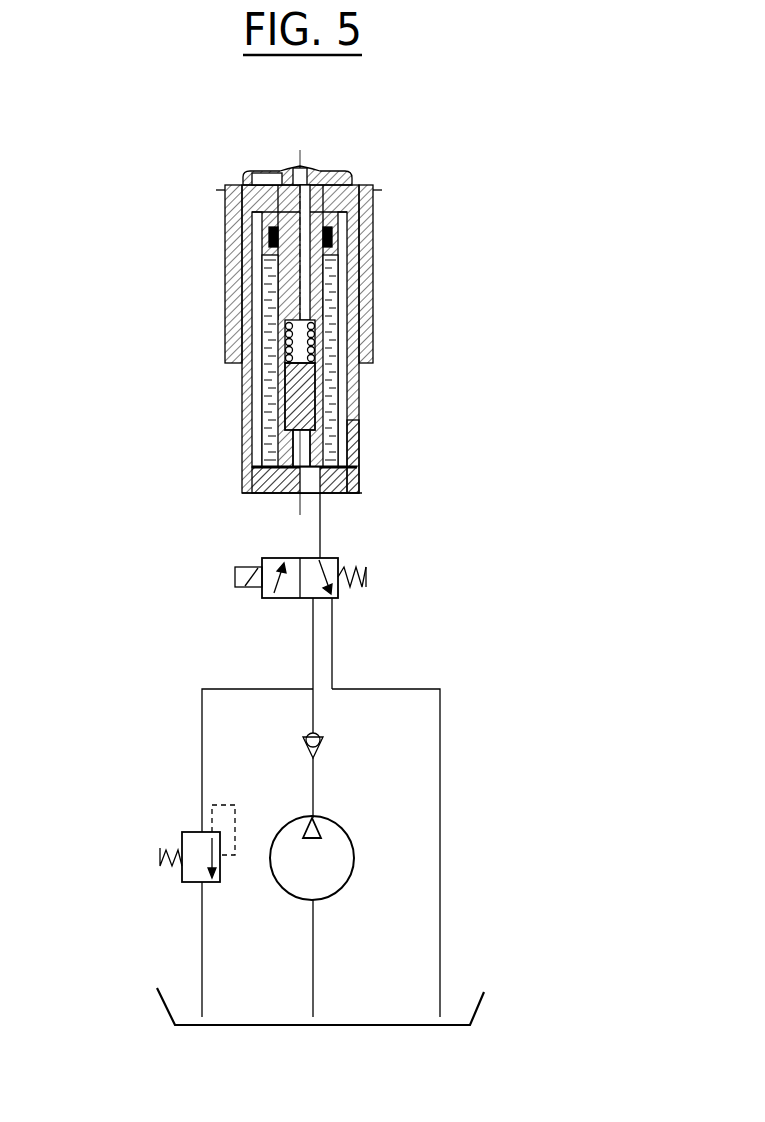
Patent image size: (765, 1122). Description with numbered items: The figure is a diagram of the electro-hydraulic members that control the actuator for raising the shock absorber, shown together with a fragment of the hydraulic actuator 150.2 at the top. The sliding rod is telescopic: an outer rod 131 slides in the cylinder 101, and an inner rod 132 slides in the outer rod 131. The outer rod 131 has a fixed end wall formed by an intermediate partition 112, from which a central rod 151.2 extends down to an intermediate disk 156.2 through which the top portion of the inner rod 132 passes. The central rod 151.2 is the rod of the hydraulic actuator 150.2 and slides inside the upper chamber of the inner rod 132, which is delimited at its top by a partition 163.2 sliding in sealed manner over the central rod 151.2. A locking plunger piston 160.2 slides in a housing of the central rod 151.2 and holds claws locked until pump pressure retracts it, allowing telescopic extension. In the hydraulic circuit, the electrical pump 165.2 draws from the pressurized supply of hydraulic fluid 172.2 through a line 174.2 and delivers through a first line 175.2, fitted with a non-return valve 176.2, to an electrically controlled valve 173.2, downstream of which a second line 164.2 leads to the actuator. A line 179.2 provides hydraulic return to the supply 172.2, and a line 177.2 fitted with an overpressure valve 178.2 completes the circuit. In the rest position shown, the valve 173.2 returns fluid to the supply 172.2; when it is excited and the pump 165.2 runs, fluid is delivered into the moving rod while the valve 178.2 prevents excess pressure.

The intermediate partition 112 is at (330, 177).
The cylinder 101 is at (368, 228).
The hydraulic actuator 150.2 is at (320, 313).
The central rod 151.2 is at (292, 278).
The locking plunger piston 160.2 is at (292, 388).
The inner rod 132 is at (348, 380).
The intermediate disk 156.2 is at (262, 458).
The outer rod 131 is at (348, 470).
The partition 163.2 is at (270, 493).
The second line 164.2 is at (320, 527).
The electrically controlled valve 173.2 is at (262, 557).
The line 177.2 is at (202, 720).
The return line 179.2 is at (440, 738).
The overpressure valve 178.2 is at (182, 832).
The first line 175.2 is at (312, 798).
The non-return valve 176.2 is at (318, 742).
The electrical pump 165.2 is at (353, 850).
The line 174.2 is at (313, 970).
The pressurized supply of hydraulic fluid 172.2 is at (478, 1012).